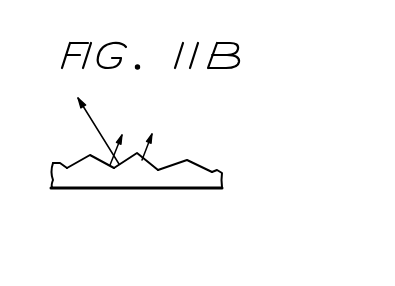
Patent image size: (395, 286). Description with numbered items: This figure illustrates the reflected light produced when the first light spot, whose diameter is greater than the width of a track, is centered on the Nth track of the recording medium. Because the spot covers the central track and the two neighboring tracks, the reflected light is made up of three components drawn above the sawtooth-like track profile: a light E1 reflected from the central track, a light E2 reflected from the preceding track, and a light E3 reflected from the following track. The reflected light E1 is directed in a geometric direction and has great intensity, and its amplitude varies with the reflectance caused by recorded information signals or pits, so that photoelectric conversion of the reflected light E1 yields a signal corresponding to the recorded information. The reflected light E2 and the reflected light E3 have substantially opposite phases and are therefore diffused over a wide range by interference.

The reflected light E1 is at (92, 120).
The reflected light E2 is at (142, 156).
The reflected light E3 is at (112, 156).